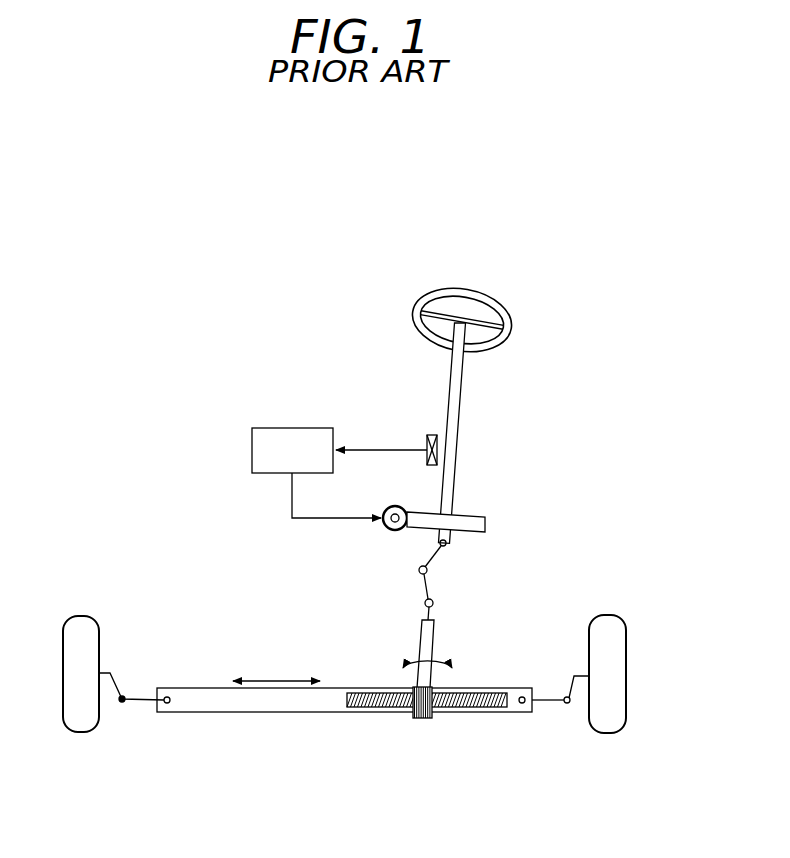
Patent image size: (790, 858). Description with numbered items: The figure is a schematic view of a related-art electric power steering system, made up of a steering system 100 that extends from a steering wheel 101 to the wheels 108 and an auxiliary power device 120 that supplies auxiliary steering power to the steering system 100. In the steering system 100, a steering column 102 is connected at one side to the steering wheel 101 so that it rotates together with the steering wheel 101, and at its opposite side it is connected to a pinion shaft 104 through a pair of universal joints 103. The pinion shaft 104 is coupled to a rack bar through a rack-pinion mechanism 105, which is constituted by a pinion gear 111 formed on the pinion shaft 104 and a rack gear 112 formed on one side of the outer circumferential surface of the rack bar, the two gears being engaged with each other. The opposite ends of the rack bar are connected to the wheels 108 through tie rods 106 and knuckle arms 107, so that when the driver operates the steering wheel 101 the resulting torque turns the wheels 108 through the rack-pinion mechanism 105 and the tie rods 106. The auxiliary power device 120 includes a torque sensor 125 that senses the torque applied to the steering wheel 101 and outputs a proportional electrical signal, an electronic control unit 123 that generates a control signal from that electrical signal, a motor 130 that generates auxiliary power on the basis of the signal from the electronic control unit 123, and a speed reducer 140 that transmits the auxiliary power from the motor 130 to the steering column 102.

The steering system 100 is at (259, 302).
The auxiliary power device 120 is at (245, 422).
The steering wheel 101 is at (412, 315).
The steering column 102 is at (461, 402).
The torque sensor 125 is at (431, 434).
The electronic control unit (ECU) 123 is at (310, 427).
The motor 130 is at (395, 506).
The speed reducer 140 is at (472, 514).
The universal joints 103 is at (432, 558).
The pinion shaft 104 is at (421, 640).
The rack-pinion mechanism 105 is at (344, 755).
The pinion gear 111 is at (422, 718).
The rack gear 112 is at (470, 707).
The tie rods 106 is at (553, 698).
The knuckle arms 107 is at (110, 672).
The wheels 108 is at (617, 622).